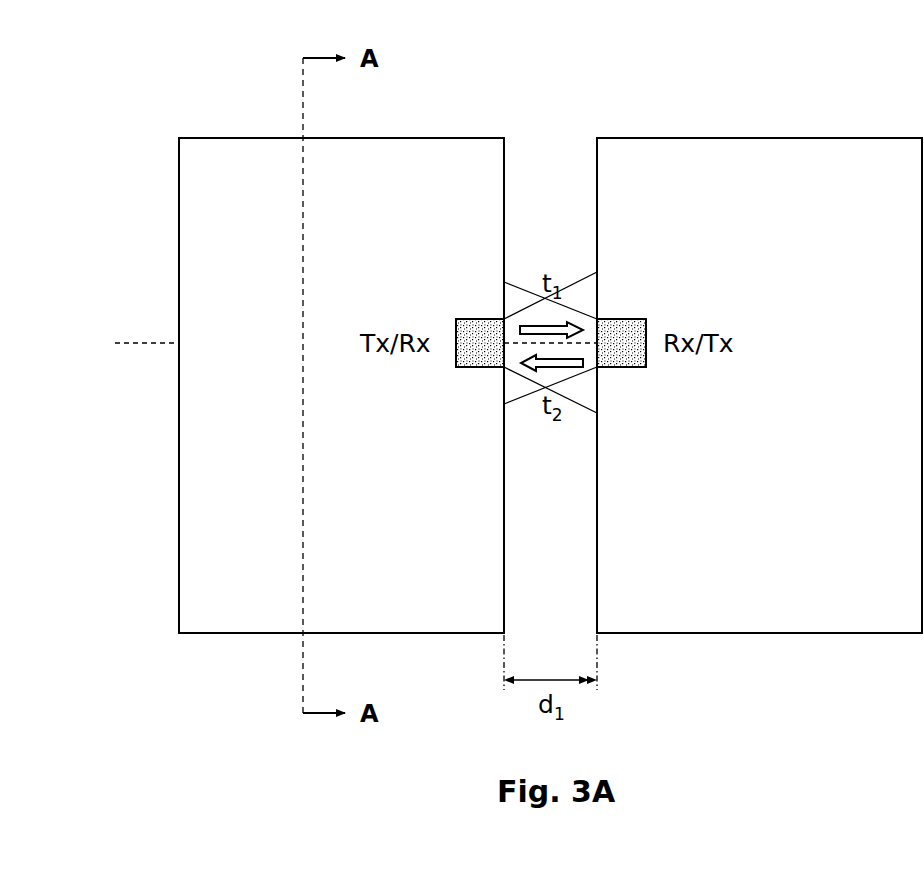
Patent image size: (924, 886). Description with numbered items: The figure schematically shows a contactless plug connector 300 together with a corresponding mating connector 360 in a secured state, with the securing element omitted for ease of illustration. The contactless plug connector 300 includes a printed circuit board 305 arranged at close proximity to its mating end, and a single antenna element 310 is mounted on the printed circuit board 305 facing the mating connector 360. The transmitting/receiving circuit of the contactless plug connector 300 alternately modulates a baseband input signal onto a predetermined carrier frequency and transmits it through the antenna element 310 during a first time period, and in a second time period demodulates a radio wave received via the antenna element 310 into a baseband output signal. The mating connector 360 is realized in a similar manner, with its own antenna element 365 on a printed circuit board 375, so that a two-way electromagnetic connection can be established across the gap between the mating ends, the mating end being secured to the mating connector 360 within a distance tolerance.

The contactless plug connector 300 is at (404, 126).
The printed circuit board 305 is at (475, 154).
The antenna element 310 is at (480, 322).
The mating connector 360 is at (750, 126).
The antenna element 365 is at (620, 322).
The printed circuit board 375 is at (865, 154).